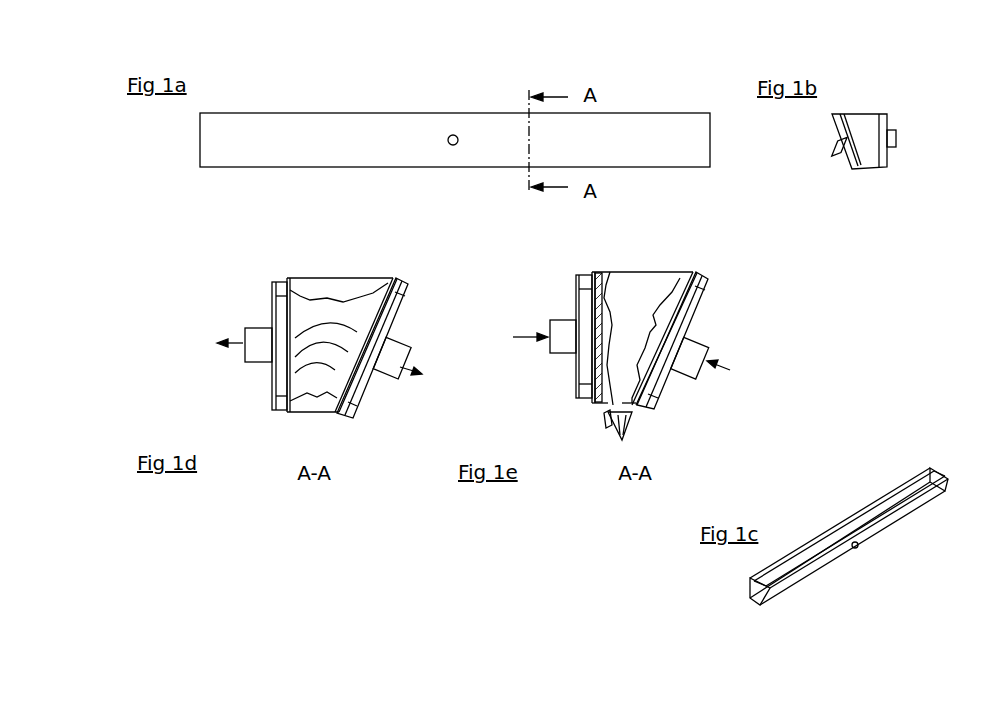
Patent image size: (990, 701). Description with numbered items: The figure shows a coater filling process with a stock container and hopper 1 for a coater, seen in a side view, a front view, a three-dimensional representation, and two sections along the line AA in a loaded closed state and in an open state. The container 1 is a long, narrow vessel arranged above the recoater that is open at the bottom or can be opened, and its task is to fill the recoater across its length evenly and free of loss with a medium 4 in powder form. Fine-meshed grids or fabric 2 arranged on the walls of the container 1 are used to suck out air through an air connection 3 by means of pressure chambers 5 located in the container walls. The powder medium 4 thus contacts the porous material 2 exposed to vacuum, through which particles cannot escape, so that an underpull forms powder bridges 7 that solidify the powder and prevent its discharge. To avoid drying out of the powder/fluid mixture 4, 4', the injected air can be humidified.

In FIG. 1A, the stock container and hopper 1 is at (323, 113).
In FIG. 1B, the stock container and hopper 1 is at (855, 112).
In FIG. 1E, the stock container and hopper 1 is at (672, 272).
In FIG. 1D, the fine-meshed grids or fabric 2 is at (288, 288).
In FIG. 1E, the fine-meshed grids or fabric 2 is at (598, 272).
In FIG. 1A, the air connection 3 is at (457, 133).
In FIG. 1B, the air connection 3 is at (894, 137).
In FIG. 1D, the air connection 3 is at (260, 343).
In FIG. 1E, the air connection 3 is at (562, 347).
In FIG. 1D, the medium in powder form 4 is at (338, 311).
In FIG. 1E, the powder/fluid mixture 4' is at (637, 306).
In FIG. 1D, the pressure chambers 5 is at (280, 387).
In FIG. 1E, the pressure chambers 5 is at (585, 375).
In FIG. 1D, the powder bridges 7 is at (337, 325).